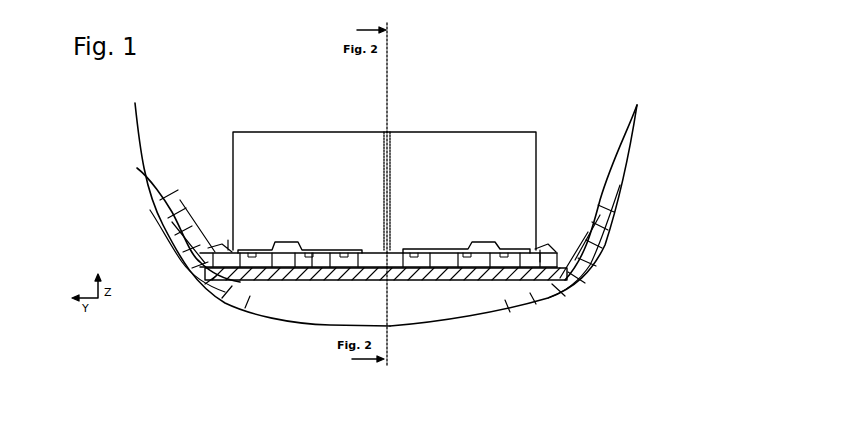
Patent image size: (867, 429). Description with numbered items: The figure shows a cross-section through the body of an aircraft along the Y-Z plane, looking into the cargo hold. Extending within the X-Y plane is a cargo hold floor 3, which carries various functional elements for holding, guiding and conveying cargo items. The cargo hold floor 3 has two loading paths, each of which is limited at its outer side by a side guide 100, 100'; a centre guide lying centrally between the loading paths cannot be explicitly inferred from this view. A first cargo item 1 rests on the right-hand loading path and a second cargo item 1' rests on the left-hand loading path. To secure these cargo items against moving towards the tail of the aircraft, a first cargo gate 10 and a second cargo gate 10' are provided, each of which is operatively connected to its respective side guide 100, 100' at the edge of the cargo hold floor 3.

The first cargo item 1 is at (491, 153).
The second cargo item 1' is at (310, 158).
The cargo hold floor 3 is at (452, 280).
The first cargo gate 10 is at (475, 303).
The second cargo gate 10' is at (293, 303).
The side guide 100 is at (566, 203).
The side guide 100' is at (217, 214).